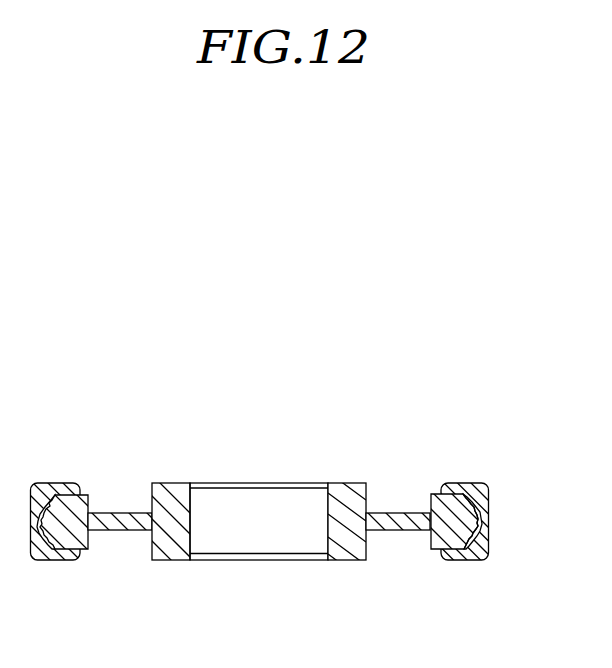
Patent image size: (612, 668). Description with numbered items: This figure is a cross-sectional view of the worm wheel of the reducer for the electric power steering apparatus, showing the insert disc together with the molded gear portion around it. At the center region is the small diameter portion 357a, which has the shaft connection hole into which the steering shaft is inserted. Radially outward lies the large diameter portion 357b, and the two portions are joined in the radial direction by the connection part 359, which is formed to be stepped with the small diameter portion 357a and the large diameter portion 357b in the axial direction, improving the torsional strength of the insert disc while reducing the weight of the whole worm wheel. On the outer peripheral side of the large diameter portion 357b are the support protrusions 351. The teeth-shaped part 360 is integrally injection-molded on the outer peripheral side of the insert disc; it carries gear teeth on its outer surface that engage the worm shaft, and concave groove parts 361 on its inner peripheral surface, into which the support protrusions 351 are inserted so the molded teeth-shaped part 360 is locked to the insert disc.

The support protrusions 351 is at (477, 508).
The small diameter portion 357a is at (171, 485).
The large diameter portion 357b is at (455, 511).
The connection part 359 is at (381, 518).
The teeth-shaped part 360 is at (458, 556).
The concave groove parts 361 is at (481, 520).